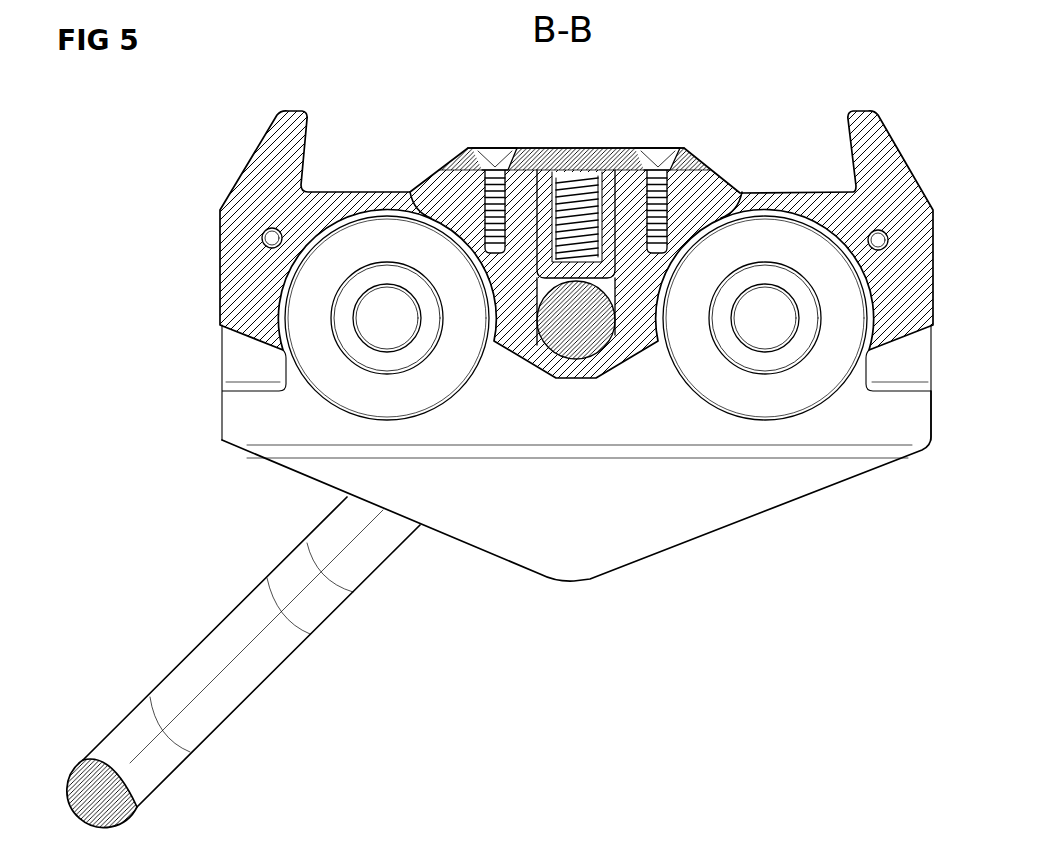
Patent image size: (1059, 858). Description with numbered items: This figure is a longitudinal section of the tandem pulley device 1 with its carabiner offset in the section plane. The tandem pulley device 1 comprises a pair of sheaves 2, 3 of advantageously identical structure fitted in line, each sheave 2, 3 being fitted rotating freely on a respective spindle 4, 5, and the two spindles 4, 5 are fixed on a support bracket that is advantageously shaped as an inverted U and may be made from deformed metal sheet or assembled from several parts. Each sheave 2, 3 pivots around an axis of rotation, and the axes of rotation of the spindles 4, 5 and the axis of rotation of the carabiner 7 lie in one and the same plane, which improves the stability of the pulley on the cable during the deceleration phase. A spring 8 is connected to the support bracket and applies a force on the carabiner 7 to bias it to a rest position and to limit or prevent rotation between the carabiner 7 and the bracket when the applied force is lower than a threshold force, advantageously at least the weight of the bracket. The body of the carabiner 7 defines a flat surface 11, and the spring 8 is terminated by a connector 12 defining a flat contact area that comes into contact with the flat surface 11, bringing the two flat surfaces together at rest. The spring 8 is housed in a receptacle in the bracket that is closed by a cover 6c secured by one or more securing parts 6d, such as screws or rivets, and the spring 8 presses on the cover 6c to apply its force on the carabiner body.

The tandem pulley device 1 is at (176, 173).
The sheave 2 is at (382, 393).
The sheave 3 is at (793, 248).
The spindle 4 is at (377, 323).
The spindle 5 is at (770, 320).
The cover 6c is at (540, 148).
The securing part 6d is at (493, 157).
The carabiner 7 is at (323, 593).
The spring 8 is at (558, 192).
The flat surface 11 is at (592, 295).
The connector 12 is at (610, 232).